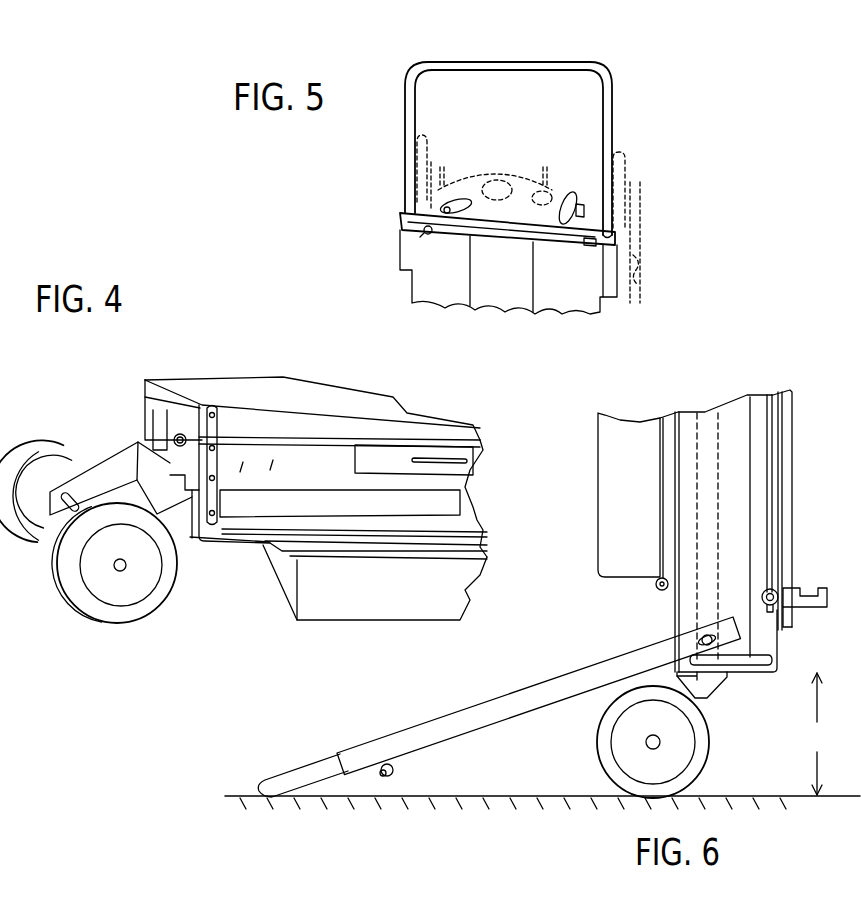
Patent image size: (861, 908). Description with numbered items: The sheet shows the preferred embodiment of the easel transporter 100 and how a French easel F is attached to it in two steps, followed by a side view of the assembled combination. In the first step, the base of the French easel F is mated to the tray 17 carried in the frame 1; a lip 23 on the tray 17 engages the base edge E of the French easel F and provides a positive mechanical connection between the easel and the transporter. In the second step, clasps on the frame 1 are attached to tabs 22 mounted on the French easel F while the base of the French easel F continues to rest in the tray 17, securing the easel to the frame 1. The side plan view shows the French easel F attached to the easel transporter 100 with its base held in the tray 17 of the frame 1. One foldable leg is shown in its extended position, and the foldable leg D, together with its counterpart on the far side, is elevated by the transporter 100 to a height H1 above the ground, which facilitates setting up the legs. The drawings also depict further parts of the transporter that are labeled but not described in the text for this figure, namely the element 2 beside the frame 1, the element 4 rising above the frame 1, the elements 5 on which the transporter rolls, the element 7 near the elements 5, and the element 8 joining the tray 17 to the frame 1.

In FIG. 5, the frame 1 is at (413, 297).
In FIG. 4, the frame 1 is at (263, 548).
In FIG. 6, the frame 1 is at (676, 608).
In FIG. 6, the panel 2 is at (598, 476).
In FIG. 5, the handle 4 is at (520, 62).
In FIG. 4, the wheel 5 is at (45, 453).
In FIG. 6, the wheel 5 is at (708, 753).
In FIG. 4, the axle 7 is at (55, 530).
In FIG. 4, the bracket 8 is at (180, 548).
In FIG. 6, the bracket 8 is at (709, 697).
In FIG. 4, the tray 17 is at (108, 455).
In FIG. 6, the tray 17 is at (727, 680).
In FIG. 5, the tabs 22 is at (468, 197).
In FIG. 4, the lip 23 is at (148, 418).
In FIG. 6, the easel transporter 100 is at (596, 604).
In FIG. 6, the foldable leg D is at (560, 680).
In FIG. 4, the base edge E is at (165, 457).
In FIG. 5, the French easel F is at (640, 222).
In FIG. 4, the French easel F is at (225, 380).
In FIG. 6, the French easel F is at (779, 650).
In FIG. 6, the height H1 is at (810, 734).